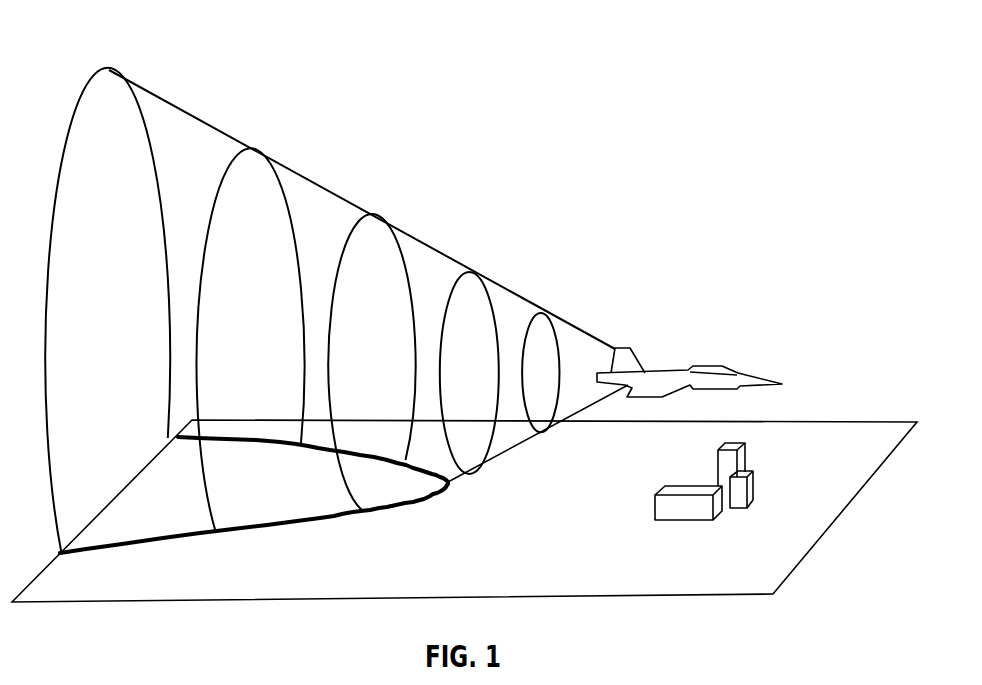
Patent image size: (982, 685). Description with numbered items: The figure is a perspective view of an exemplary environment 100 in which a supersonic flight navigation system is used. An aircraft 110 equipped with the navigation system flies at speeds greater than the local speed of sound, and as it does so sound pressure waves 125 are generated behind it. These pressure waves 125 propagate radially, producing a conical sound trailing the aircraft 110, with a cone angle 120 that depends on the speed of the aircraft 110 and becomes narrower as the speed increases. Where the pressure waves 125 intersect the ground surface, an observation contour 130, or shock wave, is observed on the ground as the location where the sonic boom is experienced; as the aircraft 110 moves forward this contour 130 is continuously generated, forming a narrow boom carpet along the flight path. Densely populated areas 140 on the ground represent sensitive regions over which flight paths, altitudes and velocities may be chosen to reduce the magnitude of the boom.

The environment 100 is at (127, 31).
The aircraft 110 is at (717, 362).
The cone angle 120 is at (602, 340).
The sound pressure waves 125 is at (138, 98).
The observation contour 130 is at (386, 510).
The densely populated areas 140 is at (743, 463).